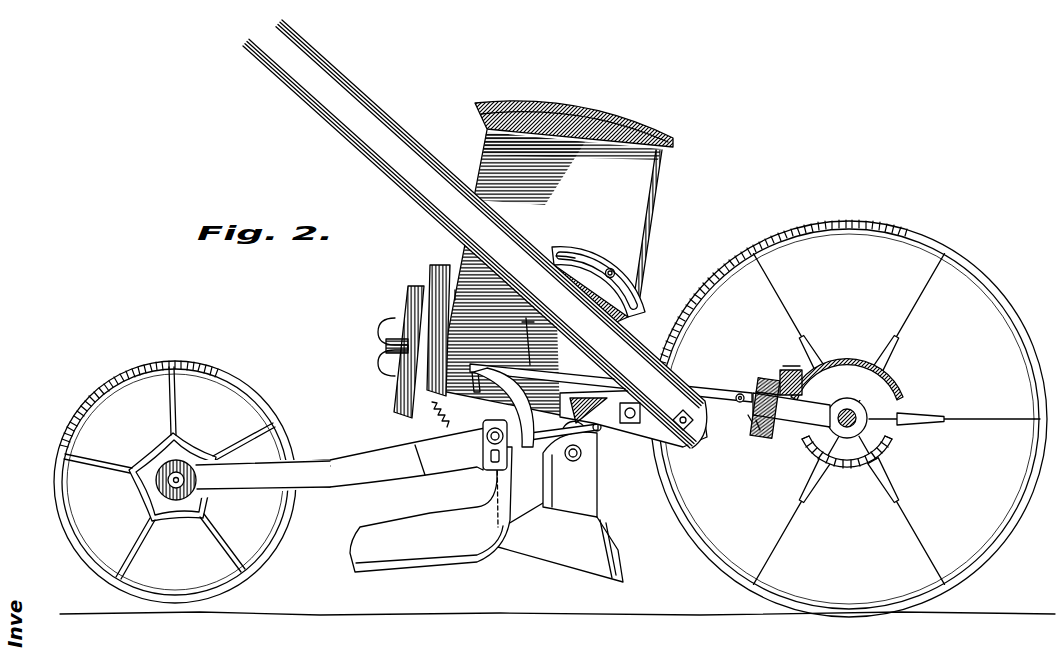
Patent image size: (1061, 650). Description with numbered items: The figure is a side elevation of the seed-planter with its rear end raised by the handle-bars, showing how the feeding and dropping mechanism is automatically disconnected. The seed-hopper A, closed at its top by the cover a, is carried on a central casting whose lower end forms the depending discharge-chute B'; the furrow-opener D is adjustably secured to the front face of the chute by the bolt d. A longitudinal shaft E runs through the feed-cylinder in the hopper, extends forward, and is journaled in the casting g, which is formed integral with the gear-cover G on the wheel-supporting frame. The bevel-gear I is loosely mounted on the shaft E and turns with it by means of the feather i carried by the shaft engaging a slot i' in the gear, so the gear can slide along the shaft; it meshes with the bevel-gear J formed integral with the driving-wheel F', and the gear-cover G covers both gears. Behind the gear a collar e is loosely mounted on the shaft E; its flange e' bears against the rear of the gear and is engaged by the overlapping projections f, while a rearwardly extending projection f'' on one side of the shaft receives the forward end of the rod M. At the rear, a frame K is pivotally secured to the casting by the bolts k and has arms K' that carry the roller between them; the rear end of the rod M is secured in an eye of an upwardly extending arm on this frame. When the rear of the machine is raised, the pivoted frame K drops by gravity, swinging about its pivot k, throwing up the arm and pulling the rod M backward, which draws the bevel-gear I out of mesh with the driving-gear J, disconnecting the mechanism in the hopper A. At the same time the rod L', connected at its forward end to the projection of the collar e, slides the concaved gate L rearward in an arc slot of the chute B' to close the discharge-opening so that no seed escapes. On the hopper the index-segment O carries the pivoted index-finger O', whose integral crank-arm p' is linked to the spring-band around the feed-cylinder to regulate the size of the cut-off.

The driving wheel F' is at (848, 418).
The seed-hopper A is at (549, 272).
The cover a is at (609, 118).
The index-segment O is at (605, 297).
The index-finger O' is at (597, 266).
The crank-arm p' is at (476, 303).
The rod L' is at (611, 427).
The sliding gate L is at (573, 436).
The furrow-opener D is at (612, 572).
The discharge-chute B' is at (580, 469).
The bolt d is at (584, 453).
The frame K is at (342, 444).
The arms K' is at (276, 491).
The bolt k is at (478, 458).
The rod M is at (713, 388).
The gear-cover G is at (897, 394).
The casting g is at (838, 388).
The bevel-gear J is at (898, 436).
The shaft E is at (718, 393).
The overlapping projections f is at (751, 404).
The collar e is at (738, 377).
The feather i is at (803, 359).
The slot i' is at (800, 332).
The bevel-gear I is at (777, 380).
The flange e' is at (731, 426).
The lower collar f'' is at (738, 446).